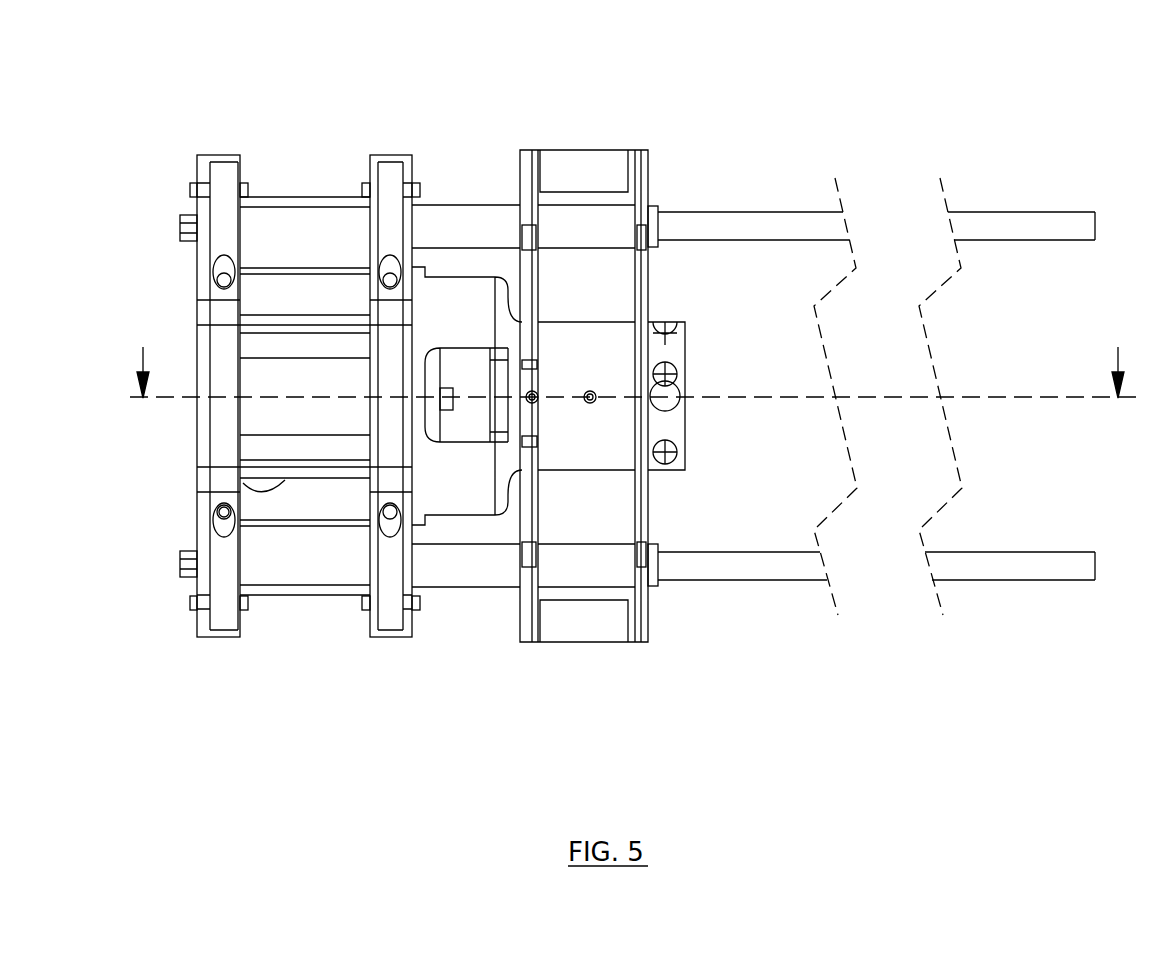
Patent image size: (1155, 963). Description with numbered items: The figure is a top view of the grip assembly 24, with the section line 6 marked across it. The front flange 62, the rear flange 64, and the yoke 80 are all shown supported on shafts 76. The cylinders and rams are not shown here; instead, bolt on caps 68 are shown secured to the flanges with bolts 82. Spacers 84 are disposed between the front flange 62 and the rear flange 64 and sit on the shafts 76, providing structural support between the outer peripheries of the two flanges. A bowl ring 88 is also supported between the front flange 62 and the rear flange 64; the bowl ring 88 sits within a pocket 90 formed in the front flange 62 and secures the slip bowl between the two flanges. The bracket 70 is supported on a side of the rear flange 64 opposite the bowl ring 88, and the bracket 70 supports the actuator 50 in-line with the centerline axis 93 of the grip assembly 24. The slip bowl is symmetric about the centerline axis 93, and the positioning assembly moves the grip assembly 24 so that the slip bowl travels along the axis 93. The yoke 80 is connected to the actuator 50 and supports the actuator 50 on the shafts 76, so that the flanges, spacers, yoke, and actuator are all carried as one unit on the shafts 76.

The grip assembly 24 is at (457, 57).
The actuator 50 is at (600, 470).
The front flange 62 is at (197, 285).
The rear flange 64 is at (410, 570).
The bolt on caps 68 is at (372, 160).
The bracket 70 is at (455, 275).
The shafts 76 is at (742, 212).
The yoke 80 is at (525, 150).
The bolts 82 is at (217, 513).
The spacers 84 is at (308, 197).
The bowl ring 88 is at (243, 483).
The pocket 90 is at (237, 467).
The centerline axis 93 is at (1068, 403).
The section line 6- 6 is at (630, 360).